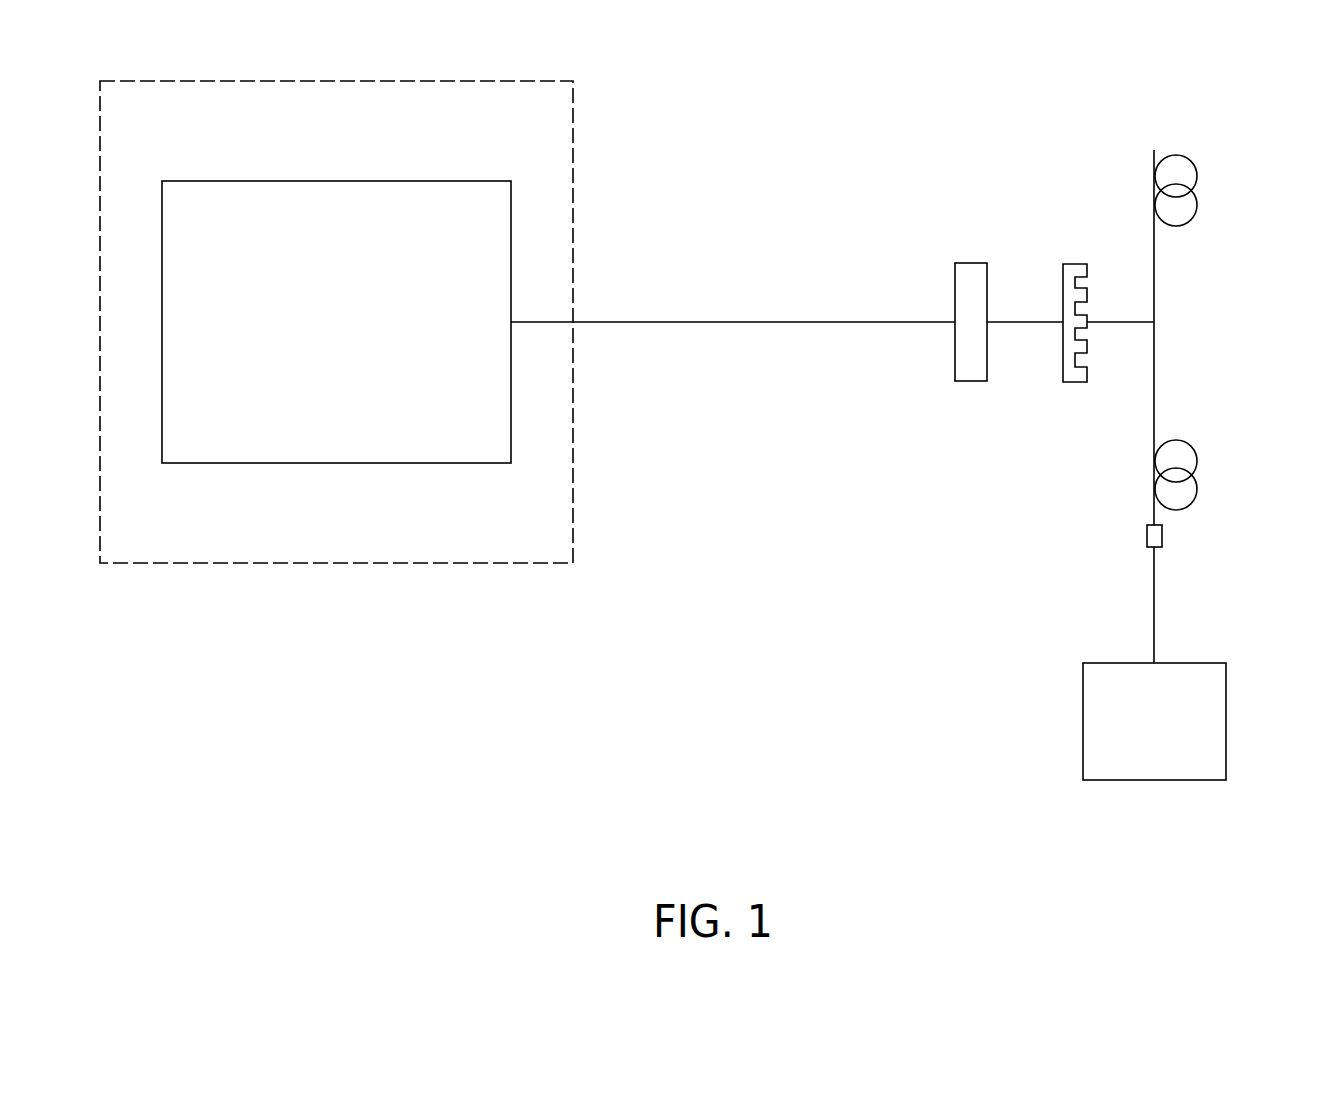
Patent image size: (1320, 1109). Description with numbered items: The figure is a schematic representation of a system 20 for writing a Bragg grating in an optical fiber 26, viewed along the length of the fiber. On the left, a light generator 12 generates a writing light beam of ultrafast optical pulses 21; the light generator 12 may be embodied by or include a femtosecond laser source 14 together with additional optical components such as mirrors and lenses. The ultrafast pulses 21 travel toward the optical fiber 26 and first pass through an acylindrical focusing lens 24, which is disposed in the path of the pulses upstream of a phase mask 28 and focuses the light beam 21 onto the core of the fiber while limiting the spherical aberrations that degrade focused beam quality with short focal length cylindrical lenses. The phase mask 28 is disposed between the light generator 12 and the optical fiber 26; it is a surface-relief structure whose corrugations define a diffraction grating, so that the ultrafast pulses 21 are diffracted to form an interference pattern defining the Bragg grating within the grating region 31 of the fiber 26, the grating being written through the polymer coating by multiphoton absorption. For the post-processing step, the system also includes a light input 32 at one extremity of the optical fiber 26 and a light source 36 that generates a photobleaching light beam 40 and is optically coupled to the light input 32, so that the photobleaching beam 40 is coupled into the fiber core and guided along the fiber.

The light generator 12 is at (295, 565).
The femtosecond laser source 14 is at (395, 181).
The system 20 is at (1255, 148).
The ultrafast light pulses 21 is at (790, 323).
The acylindrical focusing lens 24 is at (971, 263).
The optical fiber 26 is at (1192, 222).
The phase mask 28 is at (1075, 264).
The grating region 31 is at (1155, 322).
The light input 32 is at (1163, 535).
The light source 36 is at (1227, 720).
The photobleaching light beam 40 is at (1154, 617).